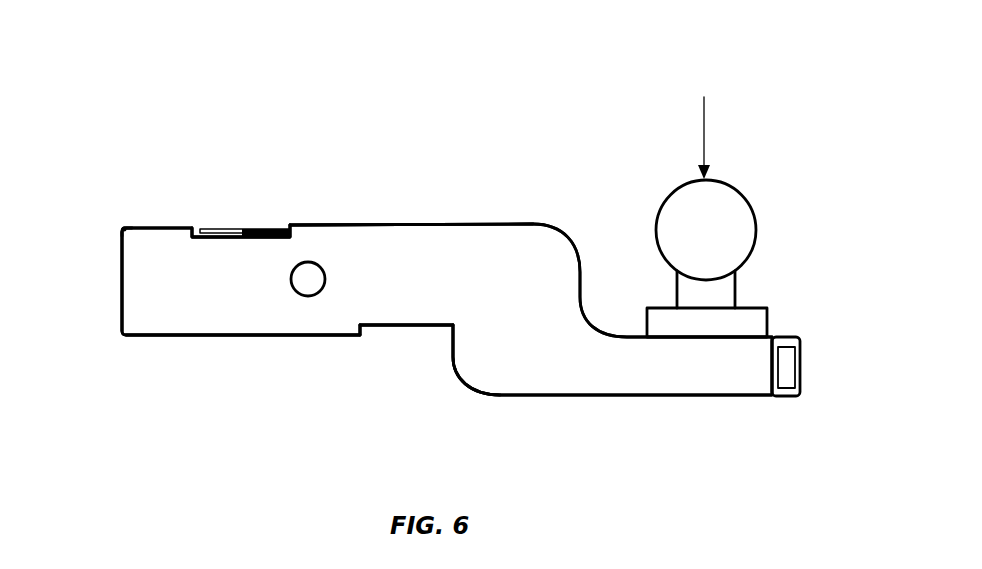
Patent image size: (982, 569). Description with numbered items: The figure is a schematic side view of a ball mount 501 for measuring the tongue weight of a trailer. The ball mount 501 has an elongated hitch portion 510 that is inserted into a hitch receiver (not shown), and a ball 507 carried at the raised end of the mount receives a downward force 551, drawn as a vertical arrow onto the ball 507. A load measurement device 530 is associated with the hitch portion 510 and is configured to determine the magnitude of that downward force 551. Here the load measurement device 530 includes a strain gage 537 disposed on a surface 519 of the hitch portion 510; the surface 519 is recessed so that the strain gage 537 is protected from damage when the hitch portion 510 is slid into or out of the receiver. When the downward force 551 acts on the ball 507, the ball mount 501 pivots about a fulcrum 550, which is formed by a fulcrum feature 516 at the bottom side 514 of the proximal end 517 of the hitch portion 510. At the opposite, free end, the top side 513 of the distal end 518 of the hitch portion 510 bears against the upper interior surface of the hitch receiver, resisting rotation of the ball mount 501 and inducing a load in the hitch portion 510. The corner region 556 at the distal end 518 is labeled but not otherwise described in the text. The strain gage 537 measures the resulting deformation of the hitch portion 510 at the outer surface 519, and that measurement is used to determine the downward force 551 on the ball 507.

The ball mount 501 is at (537, 103).
The hitch portion 510 is at (195, 320).
The distal end 518 is at (125, 351).
The top corner edge 556 is at (122, 227).
The load measurement device 530 is at (274, 208).
The strain gage 537 is at (253, 228).
The top side 513 is at (365, 201).
The surface 519 is at (248, 237).
The bottom side 514 is at (301, 352).
The fulcrum 550 is at (361, 338).
The fulcrum feature 516 is at (370, 337).
The proximal end 517 is at (416, 347).
The ball 507 is at (757, 227).
The downward force 551 is at (705, 130).